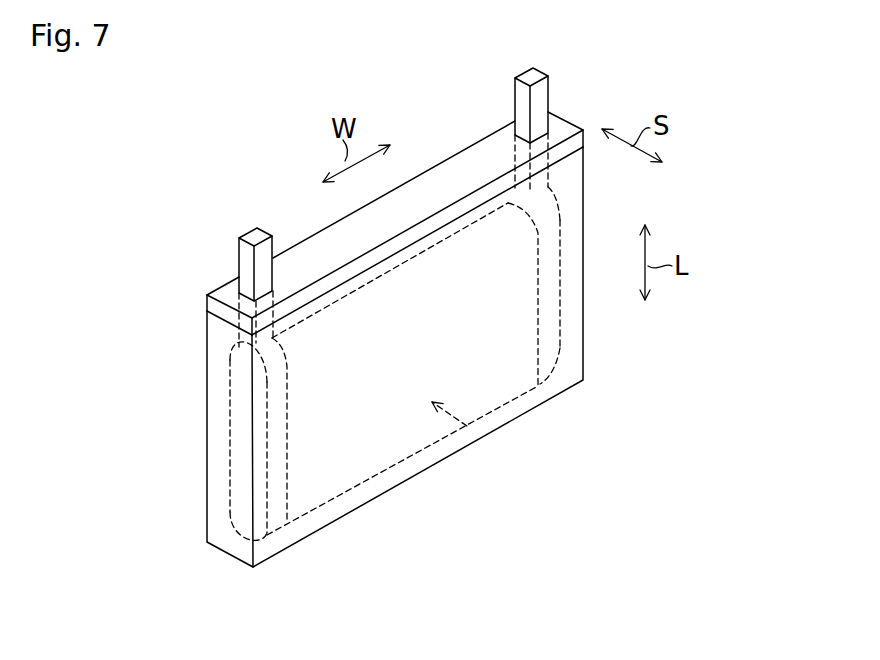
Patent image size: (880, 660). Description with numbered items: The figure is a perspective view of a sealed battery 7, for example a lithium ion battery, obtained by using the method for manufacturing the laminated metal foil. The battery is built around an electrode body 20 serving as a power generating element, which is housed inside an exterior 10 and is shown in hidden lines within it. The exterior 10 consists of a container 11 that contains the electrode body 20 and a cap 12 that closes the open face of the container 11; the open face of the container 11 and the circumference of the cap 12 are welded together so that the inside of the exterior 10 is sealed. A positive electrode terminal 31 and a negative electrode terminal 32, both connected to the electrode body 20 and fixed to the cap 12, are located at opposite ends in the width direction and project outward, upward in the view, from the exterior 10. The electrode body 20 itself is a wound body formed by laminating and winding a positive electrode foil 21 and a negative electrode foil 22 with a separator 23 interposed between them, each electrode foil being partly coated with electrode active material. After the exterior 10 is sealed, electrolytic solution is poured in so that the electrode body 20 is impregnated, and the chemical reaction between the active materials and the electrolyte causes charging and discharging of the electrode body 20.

The sealed battery 7 is at (259, 146).
The exterior 10 is at (143, 277).
The container 11 is at (215, 338).
The cap 12 is at (213, 305).
The electrode body 20 is at (487, 440).
The positive electrode foil 21 is at (290, 517).
The negative electrode foil 22 is at (560, 348).
The separator 23 is at (391, 459).
The positive electrode terminal 31 is at (243, 253).
The negative electrode terminal 32 is at (520, 92).